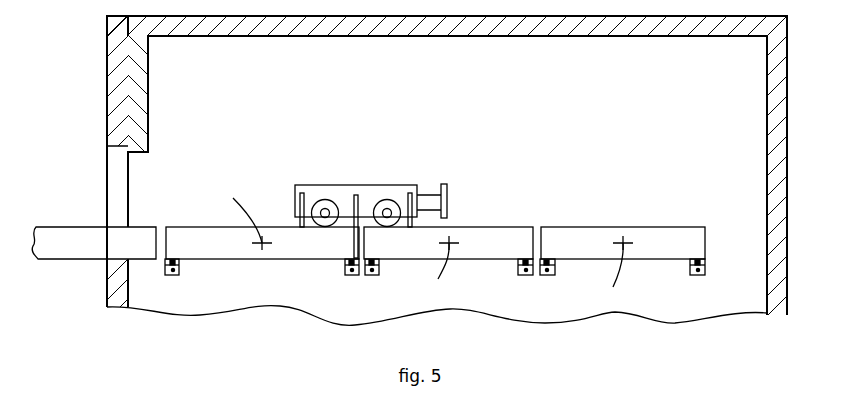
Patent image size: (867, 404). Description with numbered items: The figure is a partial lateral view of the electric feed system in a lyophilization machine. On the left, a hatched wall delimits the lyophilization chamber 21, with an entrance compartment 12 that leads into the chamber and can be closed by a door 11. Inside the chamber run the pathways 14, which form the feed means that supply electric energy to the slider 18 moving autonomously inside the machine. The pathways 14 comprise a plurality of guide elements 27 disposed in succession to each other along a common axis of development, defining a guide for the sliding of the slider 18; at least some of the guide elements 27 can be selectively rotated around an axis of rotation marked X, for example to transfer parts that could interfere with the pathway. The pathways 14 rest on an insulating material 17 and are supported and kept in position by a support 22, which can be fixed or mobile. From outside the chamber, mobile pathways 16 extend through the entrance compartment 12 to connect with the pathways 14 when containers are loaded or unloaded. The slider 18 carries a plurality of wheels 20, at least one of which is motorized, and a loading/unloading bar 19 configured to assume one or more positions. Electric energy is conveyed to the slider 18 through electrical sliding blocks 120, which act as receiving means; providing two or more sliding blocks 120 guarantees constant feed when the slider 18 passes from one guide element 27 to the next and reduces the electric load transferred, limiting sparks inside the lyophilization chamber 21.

The door 11 is at (139, 115).
The entrance compartment 12 is at (118, 146).
The lyophilization chamber 21 is at (145, 190).
The mobile pathways 16 is at (90, 236).
The pathways 14 is at (415, 215).
The guide elements 27 is at (270, 247).
The support 22 is at (173, 270).
The insulating material 17 is at (172, 262).
The slider 18 is at (347, 191).
The wheels 20 is at (315, 207).
The electrical sliding blocks 120 is at (302, 205).
The loading/unloading bar 19 is at (445, 201).